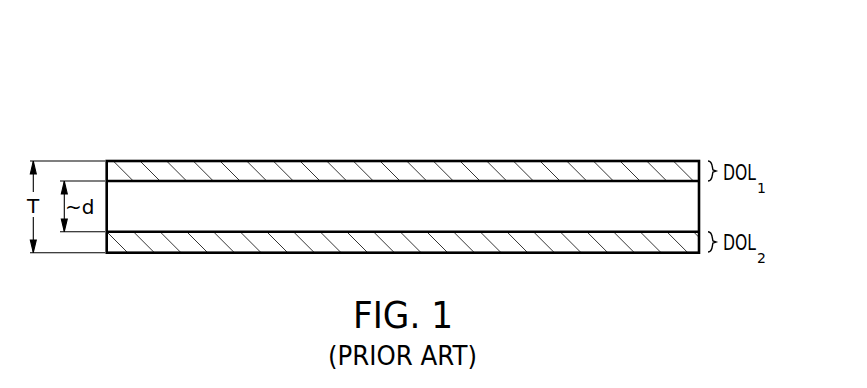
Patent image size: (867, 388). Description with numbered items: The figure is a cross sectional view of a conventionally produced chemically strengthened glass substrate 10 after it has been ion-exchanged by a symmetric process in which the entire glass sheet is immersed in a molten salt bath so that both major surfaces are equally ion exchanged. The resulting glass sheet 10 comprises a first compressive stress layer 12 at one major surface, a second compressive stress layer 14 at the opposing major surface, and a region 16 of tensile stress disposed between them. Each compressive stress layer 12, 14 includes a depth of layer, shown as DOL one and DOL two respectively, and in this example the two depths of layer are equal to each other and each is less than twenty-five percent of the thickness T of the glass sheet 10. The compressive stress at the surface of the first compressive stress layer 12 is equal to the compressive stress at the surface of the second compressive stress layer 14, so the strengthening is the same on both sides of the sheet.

The glass substrate 10 is at (510, 100).
The first compressive stress layer 12 is at (345, 173).
The second compressive stress layer 14 is at (532, 245).
The region of tensile stress 16 is at (193, 197).